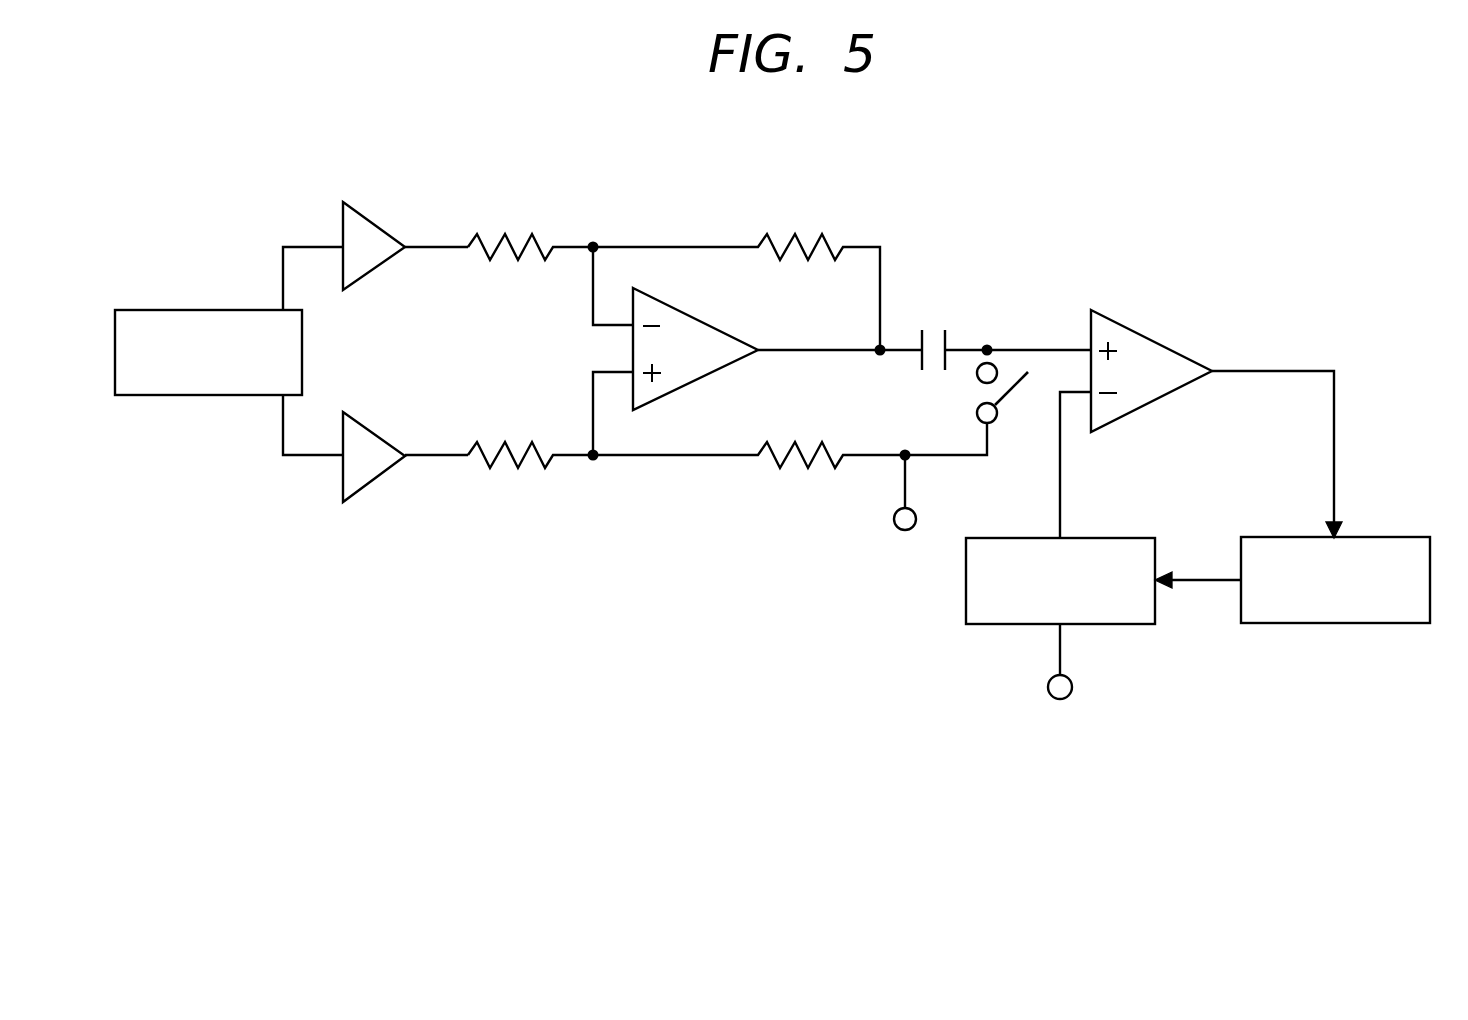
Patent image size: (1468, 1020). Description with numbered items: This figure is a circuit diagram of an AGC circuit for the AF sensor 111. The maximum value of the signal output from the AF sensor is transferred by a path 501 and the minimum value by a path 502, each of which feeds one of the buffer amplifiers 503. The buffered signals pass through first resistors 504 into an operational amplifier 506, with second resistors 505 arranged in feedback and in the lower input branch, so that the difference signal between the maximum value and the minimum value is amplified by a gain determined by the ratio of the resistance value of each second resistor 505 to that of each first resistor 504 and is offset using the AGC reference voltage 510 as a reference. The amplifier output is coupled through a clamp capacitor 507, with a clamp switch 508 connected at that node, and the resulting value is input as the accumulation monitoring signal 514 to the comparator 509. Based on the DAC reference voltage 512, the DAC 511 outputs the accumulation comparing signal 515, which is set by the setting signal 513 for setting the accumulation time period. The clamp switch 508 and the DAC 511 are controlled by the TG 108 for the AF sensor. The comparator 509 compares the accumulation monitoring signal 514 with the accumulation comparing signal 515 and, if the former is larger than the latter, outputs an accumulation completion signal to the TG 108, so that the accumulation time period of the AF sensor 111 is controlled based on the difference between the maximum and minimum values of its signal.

The AF sensor 111 is at (236, 369).
The path 501 is at (300, 247).
The path 502 is at (283, 430).
The buffer amplifiers 503 is at (375, 272).
The first resistors 504 is at (508, 233).
The second resistors 505 is at (802, 233).
The operational amplifier 506 is at (703, 320).
The clamp capacitor 507 is at (945, 332).
The clamp switch 508 is at (1013, 380).
The comparator 509 is at (1165, 342).
The AGC reference voltage 510 is at (910, 532).
The DAC 511 is at (1087, 600).
The DAC reference voltage 512 is at (1063, 700).
The setting signal 513 is at (1198, 585).
The accumulation monitoring signal 514 is at (1052, 350).
The accumulation comparing signal 515 is at (1060, 463).
The TG 108 is at (1310, 598).